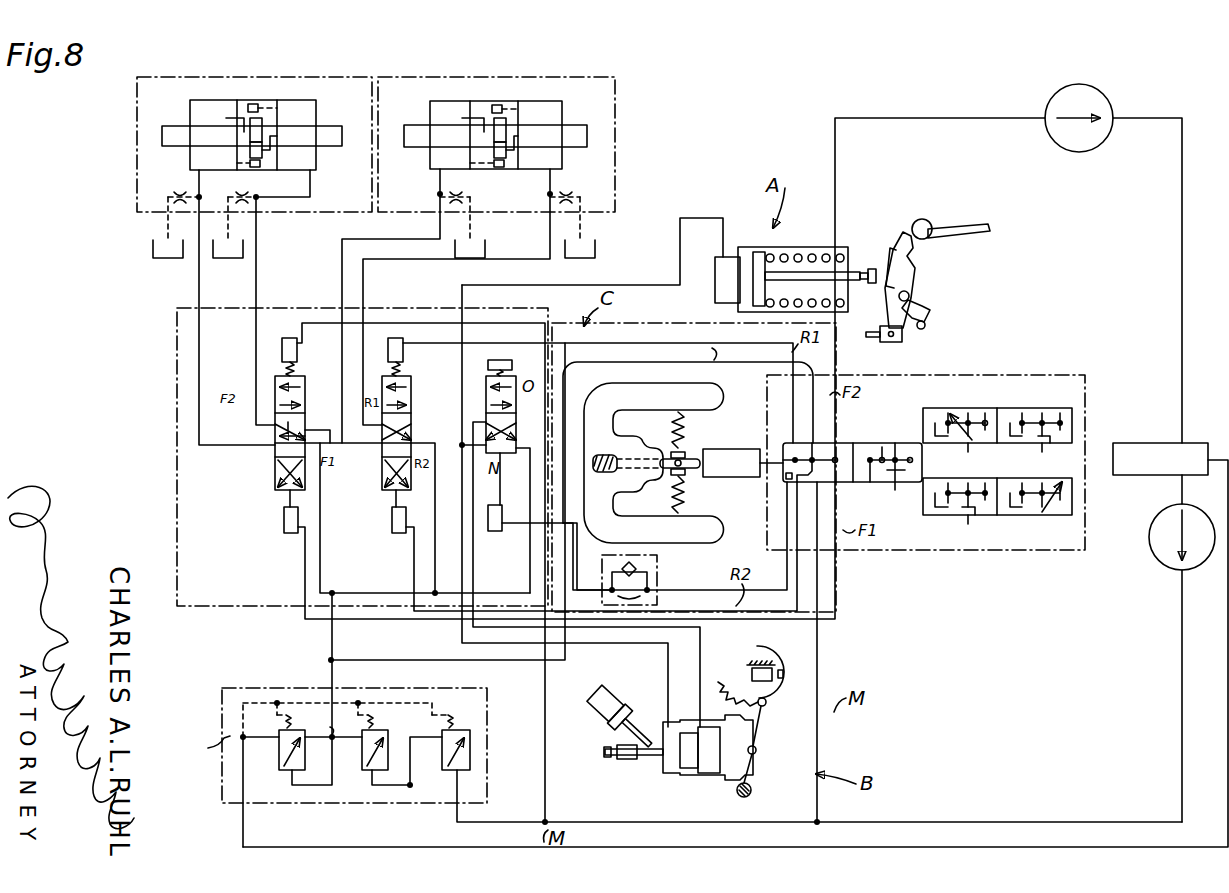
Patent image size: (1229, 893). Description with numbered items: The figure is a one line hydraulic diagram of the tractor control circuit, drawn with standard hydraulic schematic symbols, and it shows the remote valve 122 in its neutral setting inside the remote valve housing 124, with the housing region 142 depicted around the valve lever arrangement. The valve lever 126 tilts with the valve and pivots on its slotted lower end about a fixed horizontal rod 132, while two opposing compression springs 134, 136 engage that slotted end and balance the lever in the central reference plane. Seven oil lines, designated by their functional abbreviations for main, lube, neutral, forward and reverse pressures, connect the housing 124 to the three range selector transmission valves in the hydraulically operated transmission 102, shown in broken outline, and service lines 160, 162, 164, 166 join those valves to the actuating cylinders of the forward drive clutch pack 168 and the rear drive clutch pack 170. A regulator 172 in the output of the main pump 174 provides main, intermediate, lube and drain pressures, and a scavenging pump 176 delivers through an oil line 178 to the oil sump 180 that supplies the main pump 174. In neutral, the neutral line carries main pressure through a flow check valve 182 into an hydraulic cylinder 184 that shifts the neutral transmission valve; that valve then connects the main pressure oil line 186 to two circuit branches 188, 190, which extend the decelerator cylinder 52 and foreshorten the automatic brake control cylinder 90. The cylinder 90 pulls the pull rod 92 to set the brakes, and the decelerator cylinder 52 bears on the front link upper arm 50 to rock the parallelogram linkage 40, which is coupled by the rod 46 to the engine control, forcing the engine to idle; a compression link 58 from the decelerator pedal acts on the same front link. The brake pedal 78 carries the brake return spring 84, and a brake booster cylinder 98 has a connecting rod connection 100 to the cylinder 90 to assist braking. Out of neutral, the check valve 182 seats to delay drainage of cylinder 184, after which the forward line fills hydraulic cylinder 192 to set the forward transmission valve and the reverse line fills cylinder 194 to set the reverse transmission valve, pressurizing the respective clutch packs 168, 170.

The parallelogram linkage 40 is at (876, 340).
The rod 46 is at (956, 226).
The front link upper arm 50 is at (904, 228).
The decelerator cylinder 52 is at (750, 242).
The compression link 58 is at (936, 322).
The brake pedal 78 is at (786, 656).
The brake return spring 84 is at (718, 682).
The automatic brake control cylinder 90 is at (710, 780).
The pull rod 92 is at (604, 752).
The brake booster cylinder 98 is at (608, 696).
The connecting rod connection 100 is at (642, 736).
The transmission 102 is at (294, 292).
The remote valve 122 is at (1072, 420).
The remote valve housing 124 is at (1016, 366).
The valve lever 126 is at (605, 426).
The fixed horizontal rod 132 is at (700, 422).
The compression spring 134 is at (696, 488).
The compression spring 136 is at (667, 430).
The housing 142 is at (581, 376).
The service line 160 is at (186, 277).
The service line 162 is at (250, 340).
The service line 164 is at (420, 198).
The service line 166 is at (392, 272).
The forward drive clutch pack 168 is at (280, 68).
The rear drive clutch pack 170 is at (478, 78).
The regulator 172 is at (232, 688).
The main pump 174 is at (1148, 557).
The scavenging pump 176 is at (1104, 94).
The oil line 178 is at (1174, 208).
The oil sump 180 is at (1132, 438).
The flow check valve 182 is at (656, 574).
The hydraulic cylinder 184 is at (492, 532).
The oil line 186 is at (546, 680).
The circuit branch 188 is at (602, 274).
The circuit branch 190 is at (460, 636).
The hydraulic cylinder 192 is at (282, 516).
The hydraulic cylinder 194 is at (403, 346).